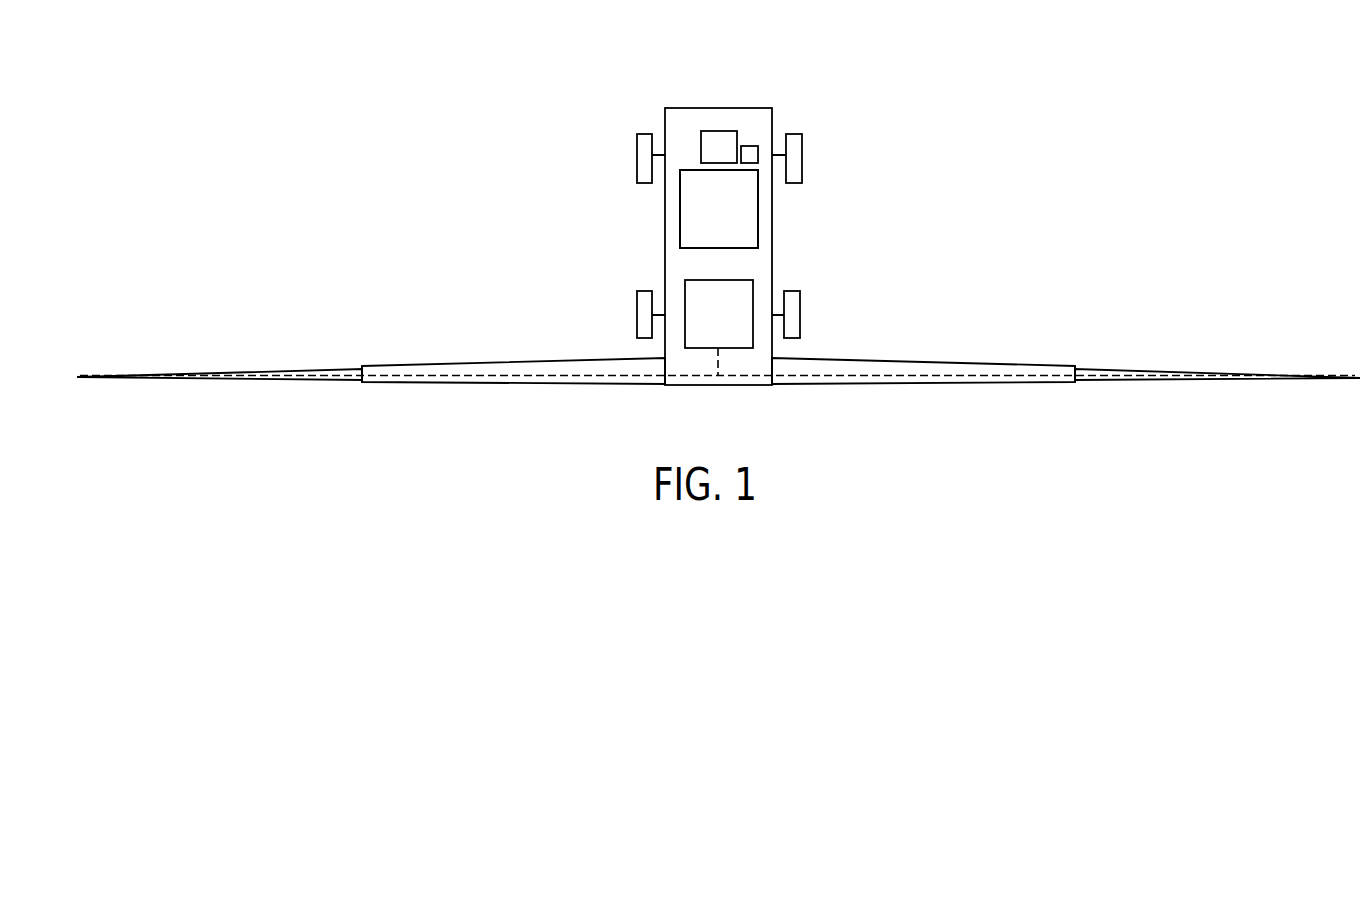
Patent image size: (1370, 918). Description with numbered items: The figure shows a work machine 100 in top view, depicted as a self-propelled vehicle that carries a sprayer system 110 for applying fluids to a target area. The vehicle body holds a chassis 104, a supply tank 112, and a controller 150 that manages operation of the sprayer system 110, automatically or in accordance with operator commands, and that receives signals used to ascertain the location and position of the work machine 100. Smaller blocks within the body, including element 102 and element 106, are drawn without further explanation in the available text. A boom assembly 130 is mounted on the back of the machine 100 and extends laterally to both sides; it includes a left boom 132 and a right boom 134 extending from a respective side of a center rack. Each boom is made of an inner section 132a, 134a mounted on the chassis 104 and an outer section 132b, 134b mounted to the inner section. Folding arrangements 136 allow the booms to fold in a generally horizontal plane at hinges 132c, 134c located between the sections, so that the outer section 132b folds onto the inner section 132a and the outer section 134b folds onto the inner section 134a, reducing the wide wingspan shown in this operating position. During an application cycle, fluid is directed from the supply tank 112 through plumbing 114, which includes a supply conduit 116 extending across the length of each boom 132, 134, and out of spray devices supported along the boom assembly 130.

The work machine 100 is at (746, 72).
The controller 102 is at (718, 131).
The chassis 104 is at (665, 247).
The tank outline 106 is at (717, 250).
The sprayer system 110 is at (552, 154).
The supply tank 112 is at (717, 280).
The plumbing 114 is at (746, 380).
The supply conduit 116 is at (513, 375).
The boom assembly 130 is at (456, 358).
The left boom 132 is at (400, 358).
The inner section of left boom 132a is at (582, 358).
The outer section of left boom 132b is at (278, 369).
The hinge of left boom 132c is at (362, 382).
The right boom 134 is at (861, 356).
The inner section of right boom 134a is at (940, 362).
The outer section of right boom 134b is at (1162, 370).
The hinge of right boom 134c is at (1073, 382).
The folding arrangements 136 is at (351, 365).
The controller 150 is at (749, 146).